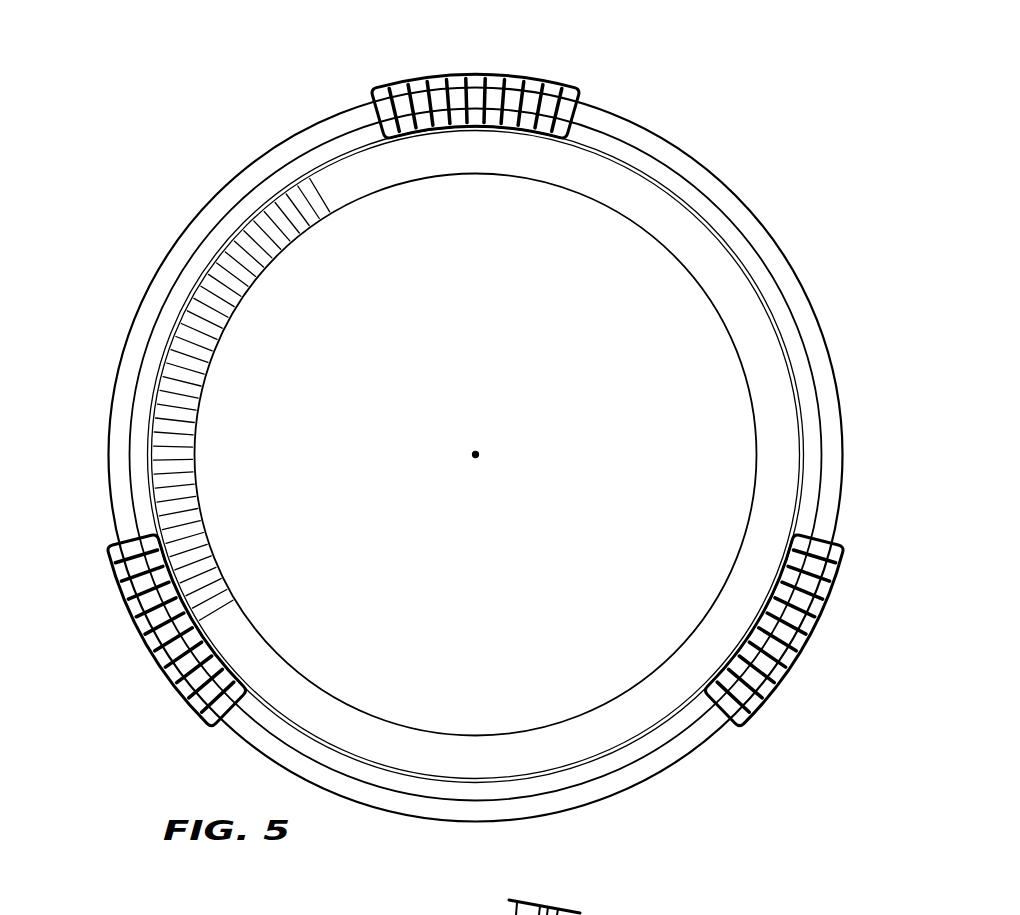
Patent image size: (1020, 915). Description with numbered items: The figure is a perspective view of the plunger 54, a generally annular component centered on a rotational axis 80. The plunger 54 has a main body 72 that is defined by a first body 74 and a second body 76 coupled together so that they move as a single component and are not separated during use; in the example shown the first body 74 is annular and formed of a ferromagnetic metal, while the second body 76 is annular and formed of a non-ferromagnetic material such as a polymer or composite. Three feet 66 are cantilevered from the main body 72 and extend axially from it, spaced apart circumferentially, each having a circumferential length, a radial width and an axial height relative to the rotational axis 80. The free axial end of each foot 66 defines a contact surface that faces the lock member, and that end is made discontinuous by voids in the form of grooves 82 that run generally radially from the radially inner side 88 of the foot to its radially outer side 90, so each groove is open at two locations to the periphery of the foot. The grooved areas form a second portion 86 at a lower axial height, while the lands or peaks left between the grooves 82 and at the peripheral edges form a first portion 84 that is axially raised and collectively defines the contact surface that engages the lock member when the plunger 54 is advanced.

The plunger 54 is at (728, 97).
The feet 66 is at (486, 399).
The main body 72 is at (721, 324).
The first body 74 is at (765, 228).
The second body 76 is at (692, 245).
The rotational axis 80 is at (478, 455).
The voids (grooves) 82 is at (413, 381).
The first portion 84 is at (557, 88).
The second portion 86 is at (242, 400).
The radially inner side 88 is at (505, 130).
The radially outer side 90 is at (437, 82).